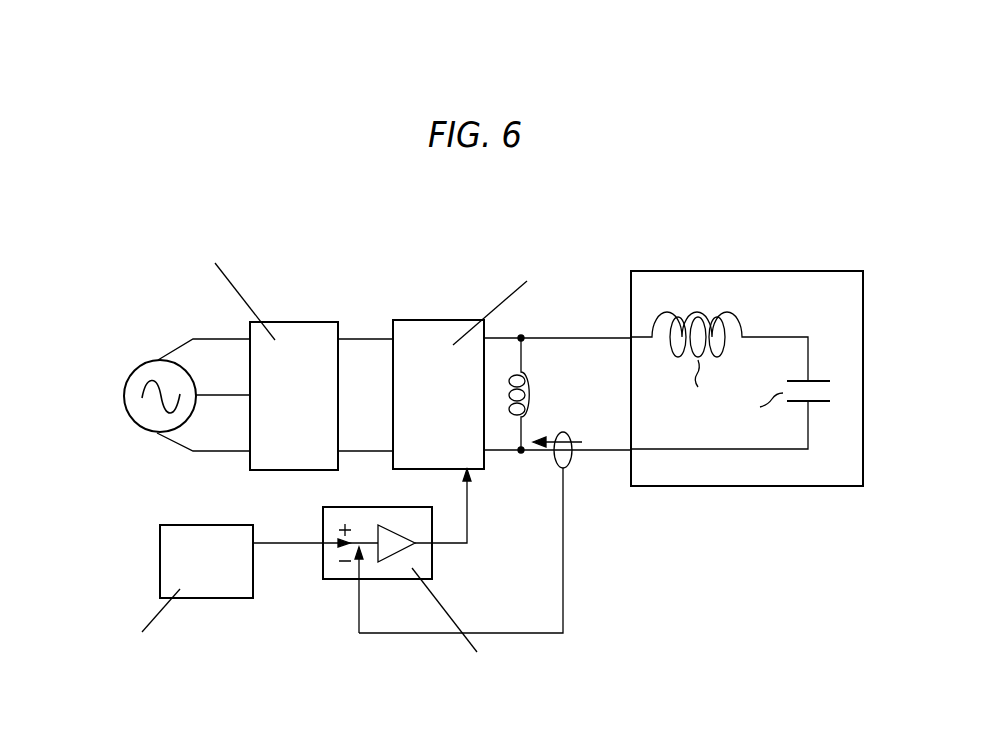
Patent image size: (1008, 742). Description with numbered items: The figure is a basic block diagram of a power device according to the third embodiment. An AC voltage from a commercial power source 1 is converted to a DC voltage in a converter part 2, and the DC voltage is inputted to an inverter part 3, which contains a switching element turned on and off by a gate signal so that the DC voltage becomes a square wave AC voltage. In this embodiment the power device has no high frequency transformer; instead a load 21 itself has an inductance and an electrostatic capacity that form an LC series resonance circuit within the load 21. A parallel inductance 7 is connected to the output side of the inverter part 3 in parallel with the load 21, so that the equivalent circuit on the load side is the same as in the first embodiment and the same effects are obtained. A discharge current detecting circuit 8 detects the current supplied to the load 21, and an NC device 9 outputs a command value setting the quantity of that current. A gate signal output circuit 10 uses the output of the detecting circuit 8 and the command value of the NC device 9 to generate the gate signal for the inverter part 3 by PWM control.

The commercial power source 1 is at (123, 396).
The converter part 2 is at (298, 322).
The inverter part 3 is at (439, 320).
The parallel inductance 7 is at (537, 392).
The discharge current detecting circuit 8 is at (571, 461).
The NC device 9 is at (160, 566).
The gate signal output circuit 10 is at (433, 556).
The load 21 is at (748, 271).